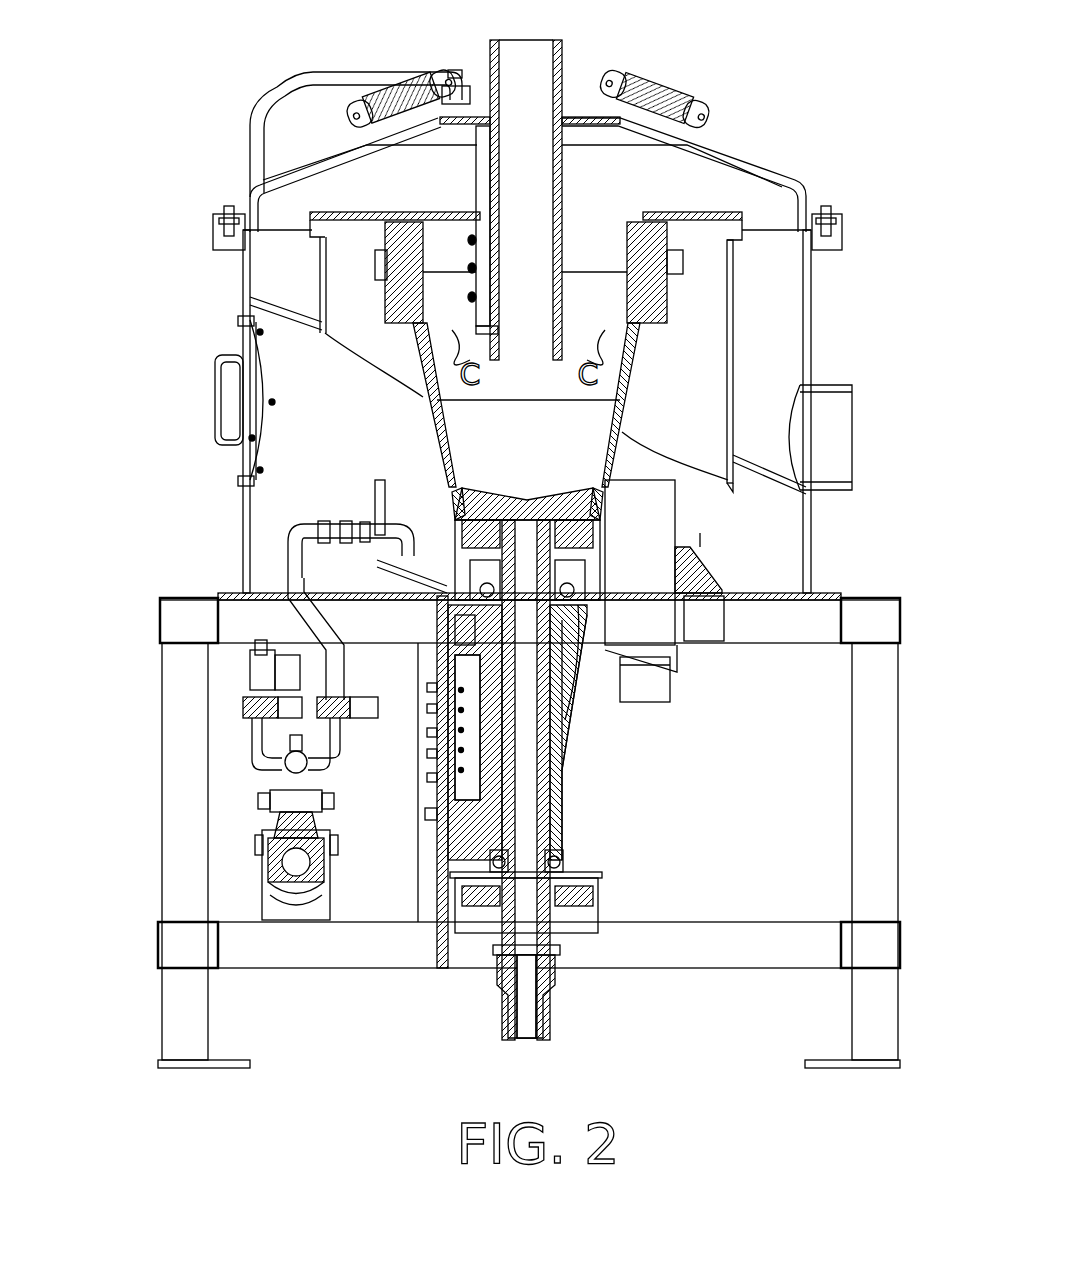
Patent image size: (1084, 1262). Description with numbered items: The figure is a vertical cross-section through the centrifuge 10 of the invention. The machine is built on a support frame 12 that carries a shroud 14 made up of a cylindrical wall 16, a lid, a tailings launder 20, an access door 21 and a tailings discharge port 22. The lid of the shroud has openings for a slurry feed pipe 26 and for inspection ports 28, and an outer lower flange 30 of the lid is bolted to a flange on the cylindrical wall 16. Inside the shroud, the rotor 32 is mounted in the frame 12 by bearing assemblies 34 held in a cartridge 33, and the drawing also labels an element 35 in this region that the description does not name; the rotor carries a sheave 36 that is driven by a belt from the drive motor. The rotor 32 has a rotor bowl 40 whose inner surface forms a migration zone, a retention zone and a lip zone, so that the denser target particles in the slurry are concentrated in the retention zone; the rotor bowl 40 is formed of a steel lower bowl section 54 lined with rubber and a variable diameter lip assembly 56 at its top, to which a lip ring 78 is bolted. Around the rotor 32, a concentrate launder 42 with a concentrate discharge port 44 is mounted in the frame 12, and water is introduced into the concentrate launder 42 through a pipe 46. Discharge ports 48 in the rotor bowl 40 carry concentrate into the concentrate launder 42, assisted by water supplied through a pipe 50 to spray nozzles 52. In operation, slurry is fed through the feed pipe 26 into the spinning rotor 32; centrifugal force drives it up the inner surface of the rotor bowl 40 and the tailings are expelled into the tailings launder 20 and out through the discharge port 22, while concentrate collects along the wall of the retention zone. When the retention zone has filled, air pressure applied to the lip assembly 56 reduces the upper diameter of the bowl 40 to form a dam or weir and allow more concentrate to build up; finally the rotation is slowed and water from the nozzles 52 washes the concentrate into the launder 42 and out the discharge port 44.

The centrifuge 10 is at (140, 323).
The support frame 12 is at (160, 743).
The shroud 14 is at (790, 162).
The cylindrical wall 16 is at (243, 540).
The tailings launder 20 is at (800, 327).
The access door 21 is at (248, 268).
The tailings discharge port 22 is at (855, 452).
The slurry feed pipe 26 is at (565, 68).
The inspection ports 28 is at (420, 82).
The outer lower flange 30 is at (213, 238).
The rotor 32 is at (433, 432).
The cartridge 33 is at (572, 788).
The bearing assemblies 34 is at (587, 682).
The drive shaft 35 is at (545, 810).
The sheave 36 is at (602, 893).
The rotor bowl 40 is at (420, 396).
The concentrate launder 42 is at (680, 505).
The concentrate discharge port 44 is at (675, 690).
The pipe 46 is at (345, 525).
The discharge ports 48 is at (450, 508).
The pipe 50 is at (268, 120).
The spray nozzles 52 is at (458, 238).
The lower bowl section 54 is at (632, 388).
The variable diameter lip assembly 56 is at (665, 300).
The lip ring 78 is at (690, 218).